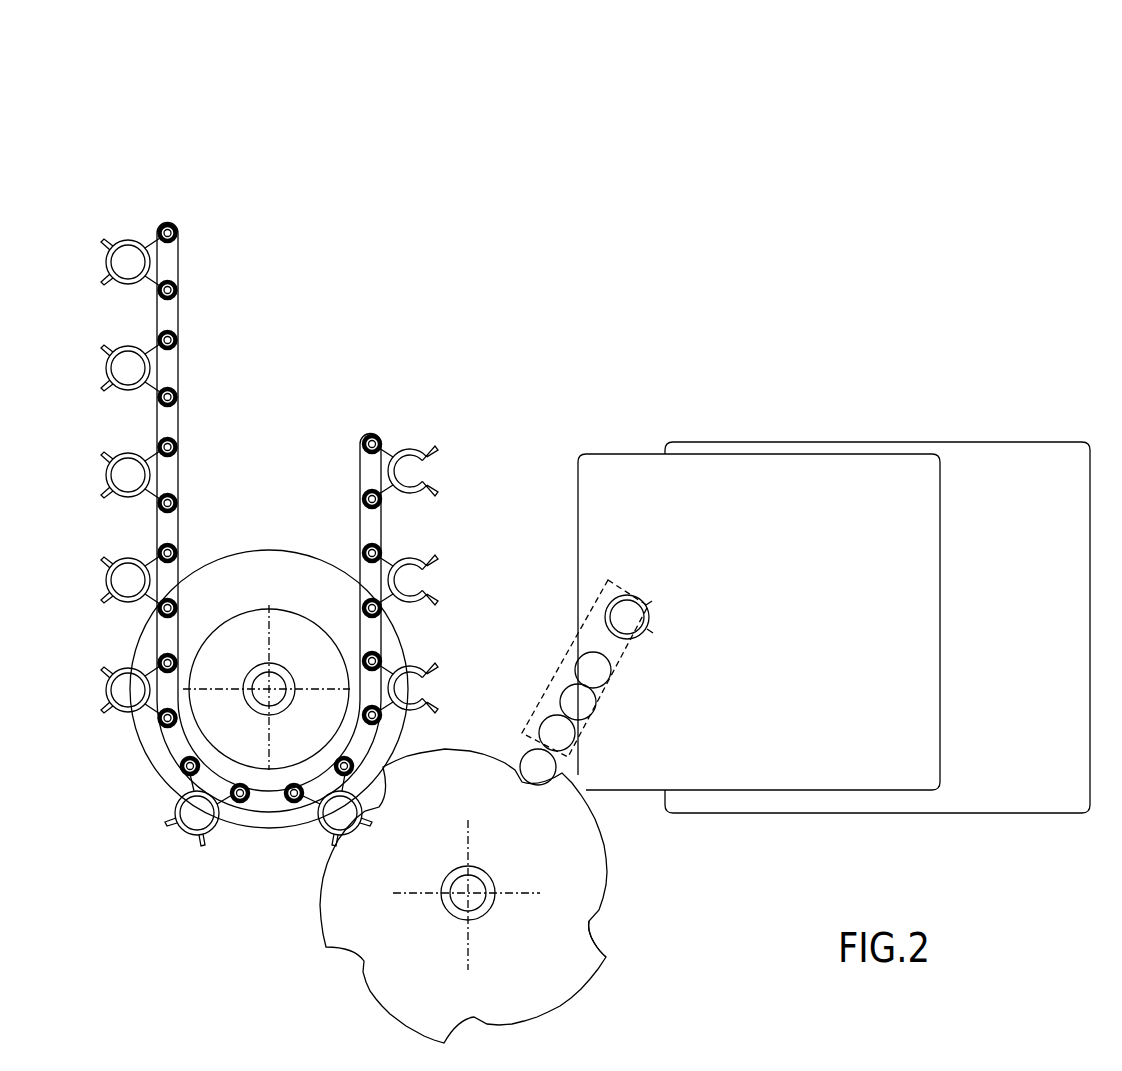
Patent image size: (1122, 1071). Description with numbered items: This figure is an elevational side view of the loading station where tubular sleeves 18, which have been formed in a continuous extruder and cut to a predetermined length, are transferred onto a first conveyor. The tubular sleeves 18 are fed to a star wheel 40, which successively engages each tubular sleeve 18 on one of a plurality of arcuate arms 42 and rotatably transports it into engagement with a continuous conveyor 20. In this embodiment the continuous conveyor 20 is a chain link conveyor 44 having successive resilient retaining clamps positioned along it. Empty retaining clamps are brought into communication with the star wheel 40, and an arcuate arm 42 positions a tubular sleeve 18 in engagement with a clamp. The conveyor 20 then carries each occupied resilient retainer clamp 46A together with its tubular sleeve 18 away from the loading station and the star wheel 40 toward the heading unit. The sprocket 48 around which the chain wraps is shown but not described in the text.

The tubular sleeve 18 is at (567, 697).
The continuous conveyor 20 is at (375, 523).
The star wheel 40 is at (592, 871).
The arcuate arm 42 is at (597, 957).
The chain link conveyor 44 is at (158, 447).
The occupied resilient retainer clamp 46A is at (114, 708).
The sprocket 48 is at (258, 760).